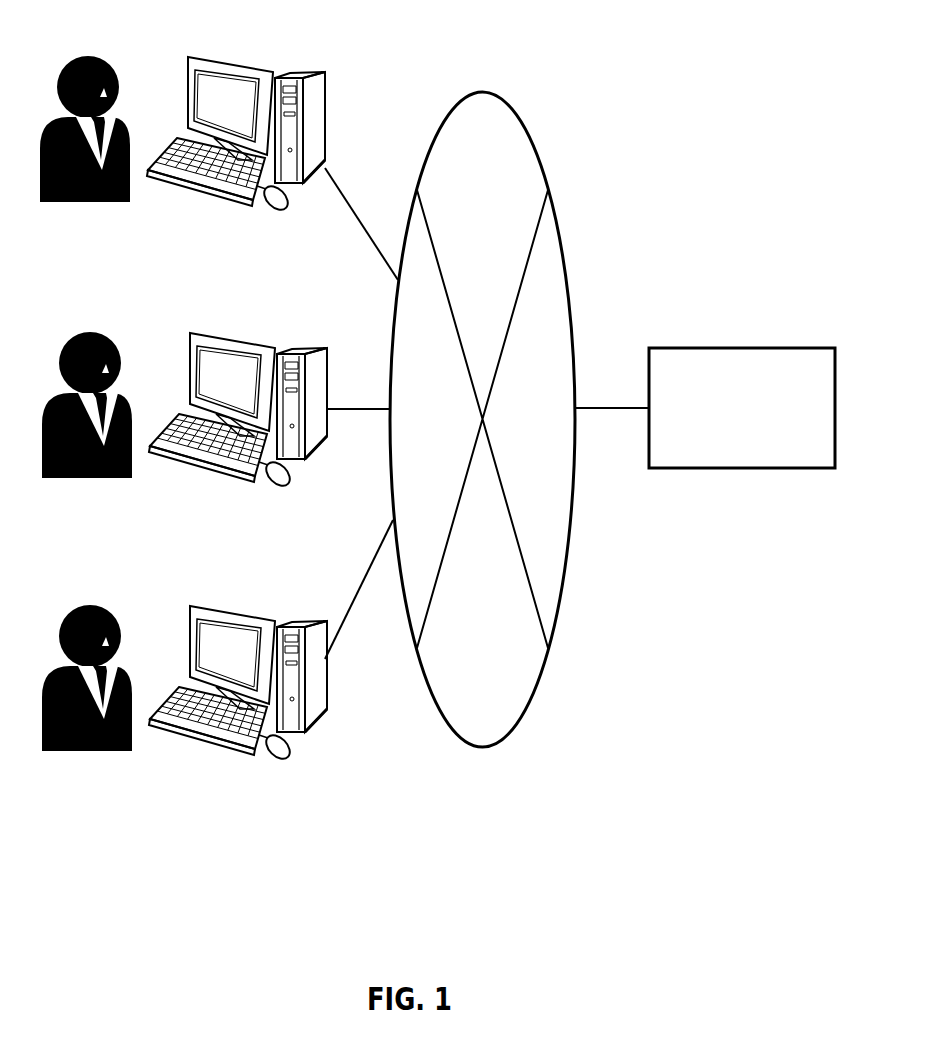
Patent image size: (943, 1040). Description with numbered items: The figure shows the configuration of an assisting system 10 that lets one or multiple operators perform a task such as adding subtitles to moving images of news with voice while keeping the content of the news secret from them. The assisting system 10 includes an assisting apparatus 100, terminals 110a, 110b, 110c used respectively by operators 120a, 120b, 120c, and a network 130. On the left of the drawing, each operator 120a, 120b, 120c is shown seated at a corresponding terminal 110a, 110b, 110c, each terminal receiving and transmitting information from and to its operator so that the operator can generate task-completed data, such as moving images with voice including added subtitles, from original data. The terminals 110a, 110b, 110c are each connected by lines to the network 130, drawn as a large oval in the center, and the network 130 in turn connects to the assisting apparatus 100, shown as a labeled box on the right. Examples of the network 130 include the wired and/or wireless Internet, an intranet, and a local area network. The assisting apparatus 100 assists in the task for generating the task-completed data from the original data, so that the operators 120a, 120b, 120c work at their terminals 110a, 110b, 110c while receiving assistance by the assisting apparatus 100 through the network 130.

The assisting system 10 is at (507, 836).
The assisting apparatus 100 is at (738, 348).
The terminal 110a is at (190, 201).
The terminal 110b is at (238, 435).
The terminal 110c is at (238, 708).
The operator 120a is at (80, 203).
The operator 120b is at (87, 434).
The operator 120c is at (87, 708).
The network 130 is at (547, 195).